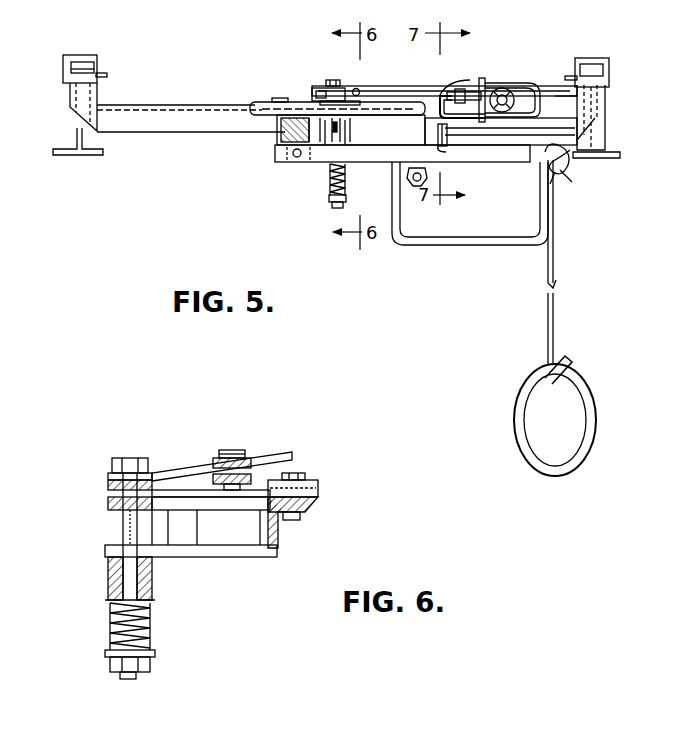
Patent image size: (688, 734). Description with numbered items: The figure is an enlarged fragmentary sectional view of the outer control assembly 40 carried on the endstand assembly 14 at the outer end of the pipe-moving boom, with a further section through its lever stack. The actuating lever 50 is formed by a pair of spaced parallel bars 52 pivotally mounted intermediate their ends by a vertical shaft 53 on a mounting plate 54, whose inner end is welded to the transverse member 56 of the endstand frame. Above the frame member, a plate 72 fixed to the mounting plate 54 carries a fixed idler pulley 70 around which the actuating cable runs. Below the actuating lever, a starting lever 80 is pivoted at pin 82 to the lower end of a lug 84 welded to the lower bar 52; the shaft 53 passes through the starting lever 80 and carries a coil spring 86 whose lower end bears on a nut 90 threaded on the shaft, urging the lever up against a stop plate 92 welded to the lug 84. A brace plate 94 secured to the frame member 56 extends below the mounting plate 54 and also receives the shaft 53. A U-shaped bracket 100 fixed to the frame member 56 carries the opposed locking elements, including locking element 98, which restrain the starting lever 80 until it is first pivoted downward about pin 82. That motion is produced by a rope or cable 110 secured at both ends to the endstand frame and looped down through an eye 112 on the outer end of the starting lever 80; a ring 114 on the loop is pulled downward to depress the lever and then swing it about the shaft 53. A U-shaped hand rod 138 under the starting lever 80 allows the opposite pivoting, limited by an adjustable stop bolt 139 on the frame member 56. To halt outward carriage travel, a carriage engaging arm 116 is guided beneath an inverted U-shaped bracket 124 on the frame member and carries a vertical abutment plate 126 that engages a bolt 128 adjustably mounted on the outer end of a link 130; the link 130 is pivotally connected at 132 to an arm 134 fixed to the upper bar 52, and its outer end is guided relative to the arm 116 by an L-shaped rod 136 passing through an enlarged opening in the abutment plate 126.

In FIG. 5, the endstand assembly 14 is at (176, 102).
In FIG. 5, the outer control assembly 40 is at (643, 25).
In FIG. 5, the actuating lever 50 is at (248, 102).
In FIG. 5, the bars 52 is at (279, 100).
In FIG. 6, the bars 52 is at (155, 481).
In FIG. 5, the vertical shaft 53 is at (330, 203).
In FIG. 6, the vertical shaft 53 is at (122, 533).
In FIG. 5, the mounting plate 54 is at (336, 88).
In FIG. 6, the mounting plate 54 is at (108, 487).
In FIG. 5, the transverse member 56 is at (135, 133).
In FIG. 6, the transverse member 56 is at (280, 522).
In FIG. 6, the idler pulley 70 is at (322, 496).
In FIG. 5, the plate 72 is at (318, 94).
In FIG. 6, the plate 72 is at (318, 483).
In FIG. 5, the starting lever 80 is at (500, 160).
In FIG. 5, the pivot pin 82 is at (295, 157).
In FIG. 5, the lug 84 is at (289, 133).
In FIG. 5, the coil spring 86 is at (342, 190).
In FIG. 6, the coil spring 86 is at (152, 626).
In FIG. 6, the nut 90 is at (150, 666).
In FIG. 5, the stop plate 92 is at (327, 145).
In FIG. 6, the stop plate 92 is at (153, 562).
In FIG. 5, the brace plate 94 is at (351, 127).
In FIG. 6, the brace plate 94 is at (200, 552).
In FIG. 5, the locking element 98 is at (447, 149).
In FIG. 5, the U-shaped bracket 100 is at (462, 131).
In FIG. 5, the rope or cable 110 is at (546, 259).
In FIG. 5, the eye 112 is at (566, 174).
In FIG. 5, the ring 114 is at (590, 380).
In FIG. 5, the carriage engaging arm 116 is at (512, 86).
In FIG. 5, the inverted U-shaped bracket 124 is at (492, 82).
In FIG. 5, the abutment plate 126 is at (483, 80).
In FIG. 5, the bolt 128 is at (430, 86).
In FIG. 5, the link 130 is at (357, 89).
In FIG. 6, the link 130 is at (256, 468).
In FIG. 6, the pivotal connection 132 is at (232, 451).
In FIG. 6, the arm 134 is at (210, 462).
In FIG. 5, the L-shaped rod 136 is at (580, 90).
In FIG. 5, the U-shaped hand rod 138 is at (432, 240).
In FIG. 5, the adjustable stop bolt 139 is at (413, 186).